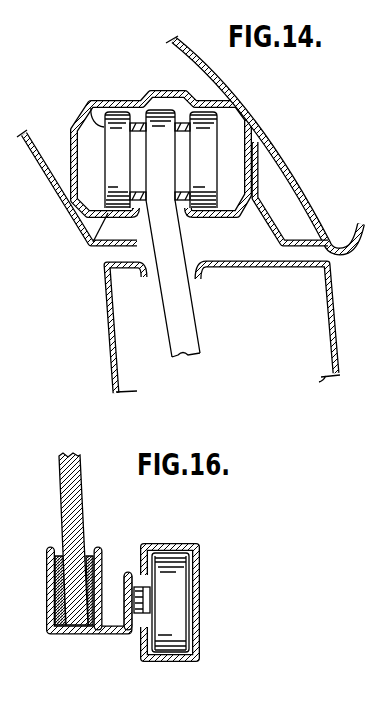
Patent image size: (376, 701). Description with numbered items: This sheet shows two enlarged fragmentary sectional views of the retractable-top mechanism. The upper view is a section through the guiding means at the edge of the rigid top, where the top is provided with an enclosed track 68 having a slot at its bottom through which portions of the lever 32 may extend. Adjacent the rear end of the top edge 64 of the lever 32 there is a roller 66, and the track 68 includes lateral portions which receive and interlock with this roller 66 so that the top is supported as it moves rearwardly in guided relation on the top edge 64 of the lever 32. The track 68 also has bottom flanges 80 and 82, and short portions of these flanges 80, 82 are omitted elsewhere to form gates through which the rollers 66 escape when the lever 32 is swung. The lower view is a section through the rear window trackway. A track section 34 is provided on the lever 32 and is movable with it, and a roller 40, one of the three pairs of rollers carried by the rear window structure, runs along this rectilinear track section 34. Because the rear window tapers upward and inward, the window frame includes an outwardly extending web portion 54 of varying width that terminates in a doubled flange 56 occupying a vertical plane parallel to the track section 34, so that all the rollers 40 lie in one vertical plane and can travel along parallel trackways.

In FIG. 14, the lever 32 is at (169, 333).
In FIG. 16, the track section 34 is at (189, 545).
In FIG. 16, the roller 40 is at (177, 591).
In FIG. 16, the web portion 54 is at (118, 620).
In FIG. 16, the doubled flange 56 is at (128, 569).
In FIG. 14, the top edge 64 is at (163, 110).
In FIG. 14, the roller 66 is at (90, 101).
In FIG. 14, the enclosed track 68 is at (72, 134).
In FIG. 14, the bottom flange 80 is at (97, 247).
In FIG. 14, the bottom flange 82 is at (213, 221).